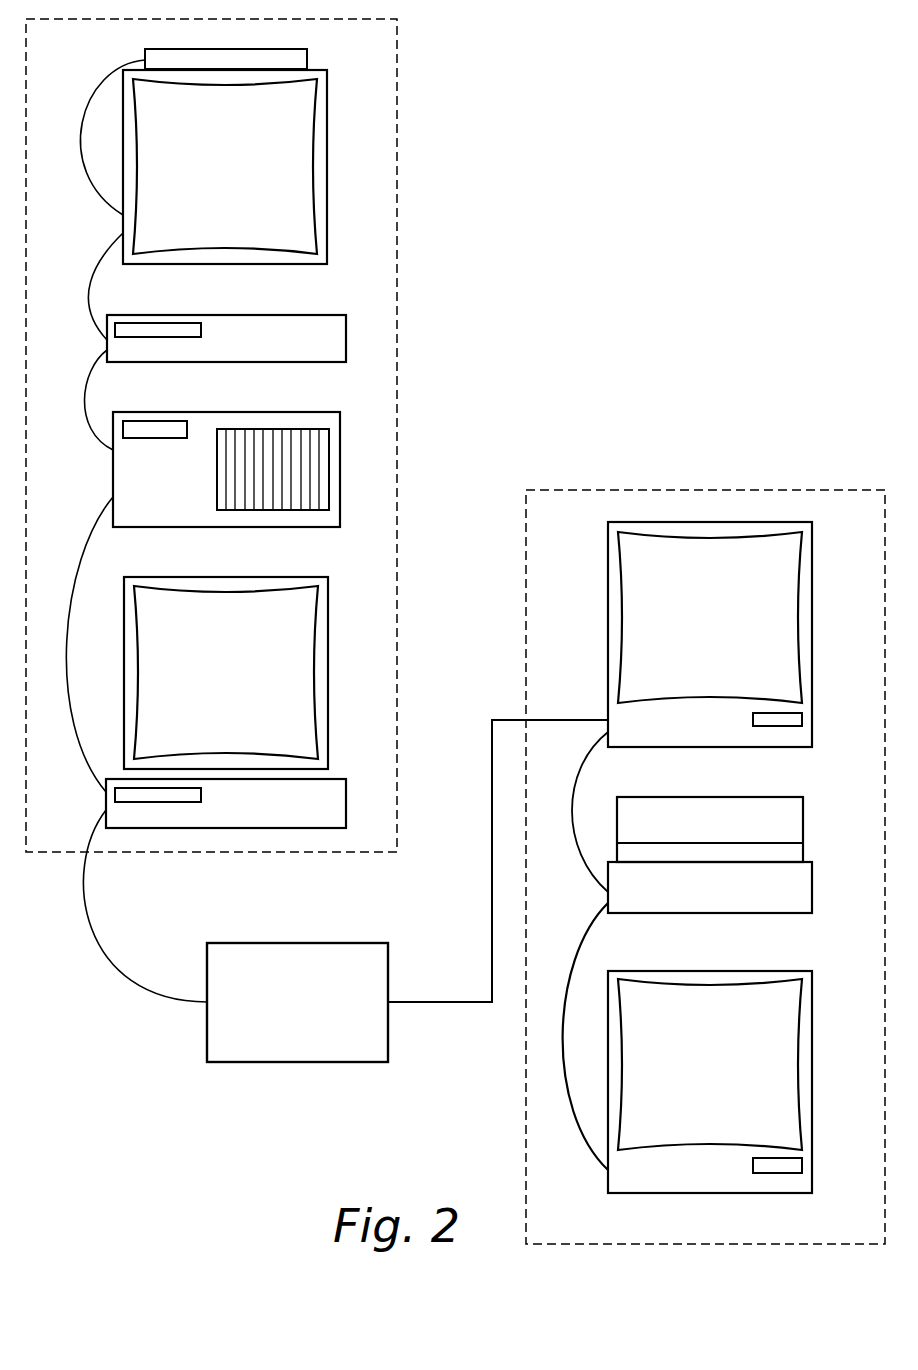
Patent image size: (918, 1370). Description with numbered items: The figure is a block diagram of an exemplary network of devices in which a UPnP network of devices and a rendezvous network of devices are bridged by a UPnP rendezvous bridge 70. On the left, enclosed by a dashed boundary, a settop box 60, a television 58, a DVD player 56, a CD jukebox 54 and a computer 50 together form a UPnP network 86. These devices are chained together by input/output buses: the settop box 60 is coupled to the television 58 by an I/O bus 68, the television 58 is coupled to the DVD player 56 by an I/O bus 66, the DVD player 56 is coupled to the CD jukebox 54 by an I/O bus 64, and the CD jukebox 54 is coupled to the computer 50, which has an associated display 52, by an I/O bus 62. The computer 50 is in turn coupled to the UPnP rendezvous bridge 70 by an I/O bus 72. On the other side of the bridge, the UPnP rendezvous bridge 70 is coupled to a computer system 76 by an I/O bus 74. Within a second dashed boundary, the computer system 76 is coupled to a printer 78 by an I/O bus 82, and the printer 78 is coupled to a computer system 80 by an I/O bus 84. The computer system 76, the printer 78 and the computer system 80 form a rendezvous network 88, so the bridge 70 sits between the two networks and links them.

The computer 50 is at (347, 788).
The display 52 is at (329, 645).
The CD jukebox 54 is at (303, 411).
The DVD player 56 is at (210, 314).
The television 58 is at (287, 266).
The settop box 60 is at (308, 62).
The I/O bus 62 is at (84, 536).
The I/O bus 64 is at (85, 402).
The I/O bus 66 is at (87, 300).
The I/O bus 68 is at (78, 178).
The UPnP rendezvous bridge 70 is at (293, 1064).
The I/O bus 72 is at (99, 952).
The I/O bus 74 is at (435, 1000).
The computer system 76 is at (607, 607).
The printer 78 is at (750, 915).
The computer system 80 is at (750, 1195).
The I/O bus 82 is at (578, 782).
The I/O bus 84 is at (578, 956).
The UPnP network 86 is at (399, 32).
The rendezvous network 88 is at (805, 488).